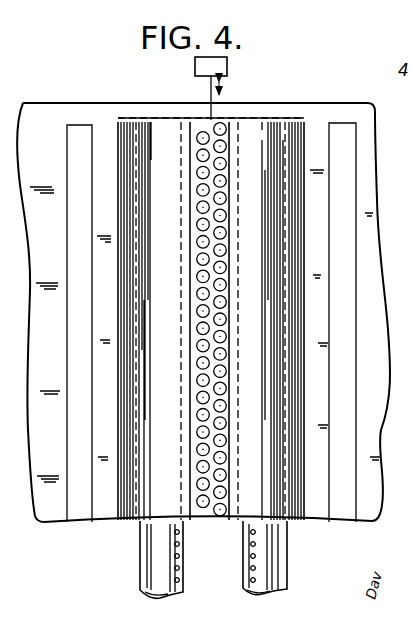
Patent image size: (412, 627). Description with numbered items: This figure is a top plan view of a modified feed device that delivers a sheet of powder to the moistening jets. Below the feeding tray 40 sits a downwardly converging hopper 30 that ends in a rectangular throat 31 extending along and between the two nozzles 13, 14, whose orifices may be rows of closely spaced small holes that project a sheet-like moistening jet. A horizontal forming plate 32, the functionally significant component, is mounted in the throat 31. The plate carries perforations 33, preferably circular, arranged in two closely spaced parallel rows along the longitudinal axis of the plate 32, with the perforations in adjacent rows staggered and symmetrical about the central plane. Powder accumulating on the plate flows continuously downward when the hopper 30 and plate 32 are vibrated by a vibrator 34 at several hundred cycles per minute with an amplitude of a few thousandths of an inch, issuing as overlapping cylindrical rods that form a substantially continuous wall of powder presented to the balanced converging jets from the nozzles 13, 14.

The nozzle 13 is at (142, 572).
The nozzle 14 is at (288, 569).
The downwardly converging hopper 30 is at (153, 133).
The rectangular throat 31 is at (188, 481).
The forming plate 32 is at (218, 520).
The perforations 33 is at (222, 180).
The vibrator 34 is at (227, 66).
The feeding tray 40 is at (98, 123).